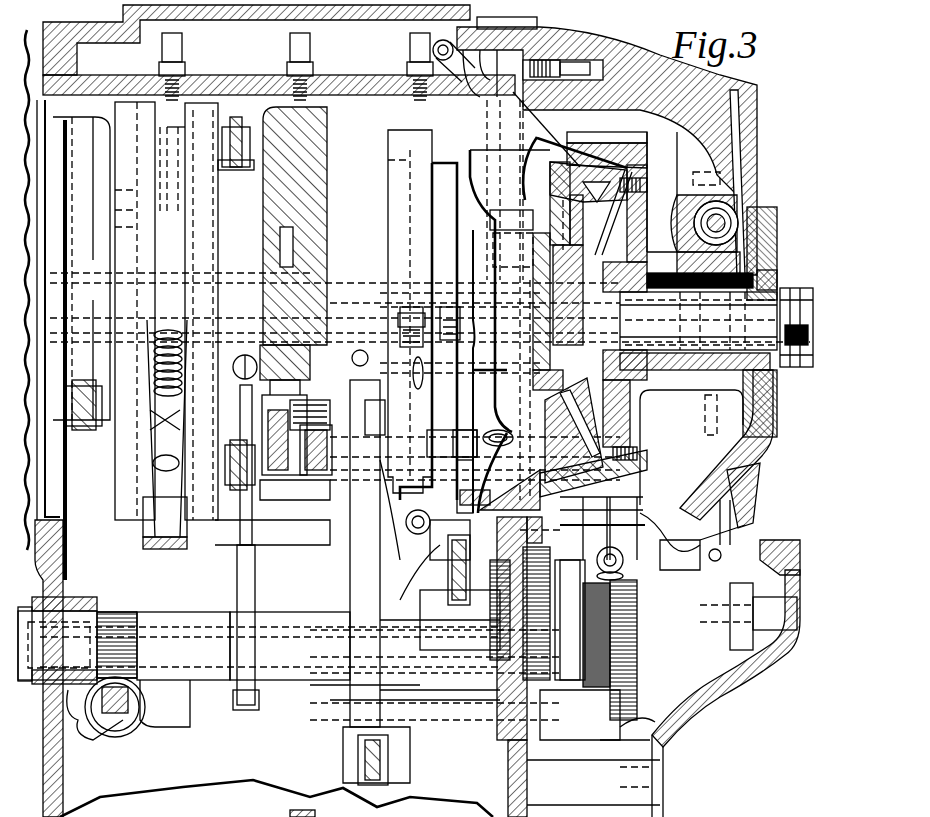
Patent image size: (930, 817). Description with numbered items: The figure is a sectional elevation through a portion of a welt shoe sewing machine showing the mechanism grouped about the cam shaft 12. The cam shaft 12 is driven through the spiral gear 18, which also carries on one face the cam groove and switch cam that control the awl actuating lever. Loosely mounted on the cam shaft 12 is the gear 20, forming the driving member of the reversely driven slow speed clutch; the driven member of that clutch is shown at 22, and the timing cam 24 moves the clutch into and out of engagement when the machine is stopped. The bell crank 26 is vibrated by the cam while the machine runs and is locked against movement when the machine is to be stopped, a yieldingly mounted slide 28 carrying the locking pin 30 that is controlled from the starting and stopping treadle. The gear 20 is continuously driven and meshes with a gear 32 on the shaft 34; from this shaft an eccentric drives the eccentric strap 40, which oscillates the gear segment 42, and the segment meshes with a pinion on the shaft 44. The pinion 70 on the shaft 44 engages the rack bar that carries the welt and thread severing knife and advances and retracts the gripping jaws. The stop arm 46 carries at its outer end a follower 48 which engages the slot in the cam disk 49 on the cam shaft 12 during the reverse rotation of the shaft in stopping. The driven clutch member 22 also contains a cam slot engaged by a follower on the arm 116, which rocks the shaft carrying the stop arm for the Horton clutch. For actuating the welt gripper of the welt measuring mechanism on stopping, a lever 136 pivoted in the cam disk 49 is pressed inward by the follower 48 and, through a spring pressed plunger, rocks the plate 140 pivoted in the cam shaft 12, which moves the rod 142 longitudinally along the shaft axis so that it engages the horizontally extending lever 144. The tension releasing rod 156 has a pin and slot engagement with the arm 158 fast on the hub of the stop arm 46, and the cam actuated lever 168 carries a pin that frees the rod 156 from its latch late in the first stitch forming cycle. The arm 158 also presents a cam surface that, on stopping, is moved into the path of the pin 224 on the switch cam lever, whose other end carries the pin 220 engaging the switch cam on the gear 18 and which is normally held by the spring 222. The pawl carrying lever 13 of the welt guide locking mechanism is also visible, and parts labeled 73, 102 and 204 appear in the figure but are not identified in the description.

The cam shaft 12 is at (230, 282).
The cam actuated pawl carrying lever 13 is at (445, 474).
The spiral gear 18 is at (327, 210).
The gear 20 is at (622, 100).
The driven member of the slow speed clutch 22 is at (590, 130).
The timing cam 24 is at (482, 278).
The bell crank 26 is at (503, 180).
The yieldingly mounted slide 28 is at (750, 207).
The locking pin 30 is at (722, 178).
The gear 32 is at (660, 690).
The shaft 34 is at (760, 598).
The eccentric strap 40 is at (281, 813).
The oscillating gear segment 42 is at (498, 640).
The shaft 44 is at (157, 630).
The stop arm 46 is at (353, 565).
The follower 48 is at (378, 412).
The cam disk 49 is at (393, 158).
The pinion 70 is at (117, 613).
The bolt 73 is at (447, 612).
The pin 102 is at (748, 497).
The arm 116 is at (490, 485).
The lever 136 is at (418, 385).
The plate 140 is at (398, 309).
The rod 142 is at (628, 352).
The lever 144 is at (800, 292).
The tension releasing rod 156 is at (213, 542).
The arm 158 is at (250, 597).
The cam actuated lever 168 is at (92, 437).
The plate 204 is at (128, 118).
The pin 220 is at (320, 420).
The spring 222 is at (262, 416).
The pin 224 is at (258, 337).